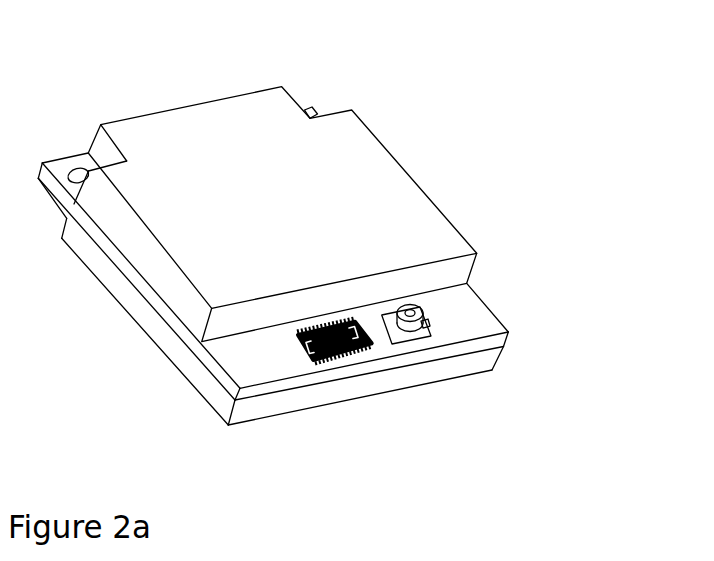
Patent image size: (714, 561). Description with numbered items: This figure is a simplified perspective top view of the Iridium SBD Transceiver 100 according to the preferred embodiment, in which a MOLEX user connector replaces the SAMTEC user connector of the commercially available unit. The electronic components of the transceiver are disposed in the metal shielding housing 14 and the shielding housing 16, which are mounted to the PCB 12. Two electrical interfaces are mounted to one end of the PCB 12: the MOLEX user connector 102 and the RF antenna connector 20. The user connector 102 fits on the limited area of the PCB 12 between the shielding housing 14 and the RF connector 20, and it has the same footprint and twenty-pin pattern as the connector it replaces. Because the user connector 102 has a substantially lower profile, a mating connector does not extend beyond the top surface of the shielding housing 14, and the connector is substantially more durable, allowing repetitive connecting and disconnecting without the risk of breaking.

The Iridium 9603/9603N SBD Transceiver 100 is at (351, 242).
The shielding housing 14 is at (345, 196).
The PCB 12 is at (470, 313).
The shielding housing 16 is at (165, 333).
The MOLEX 501591-2011 user connector 102 is at (342, 358).
The RF antenna connector 20 is at (423, 325).